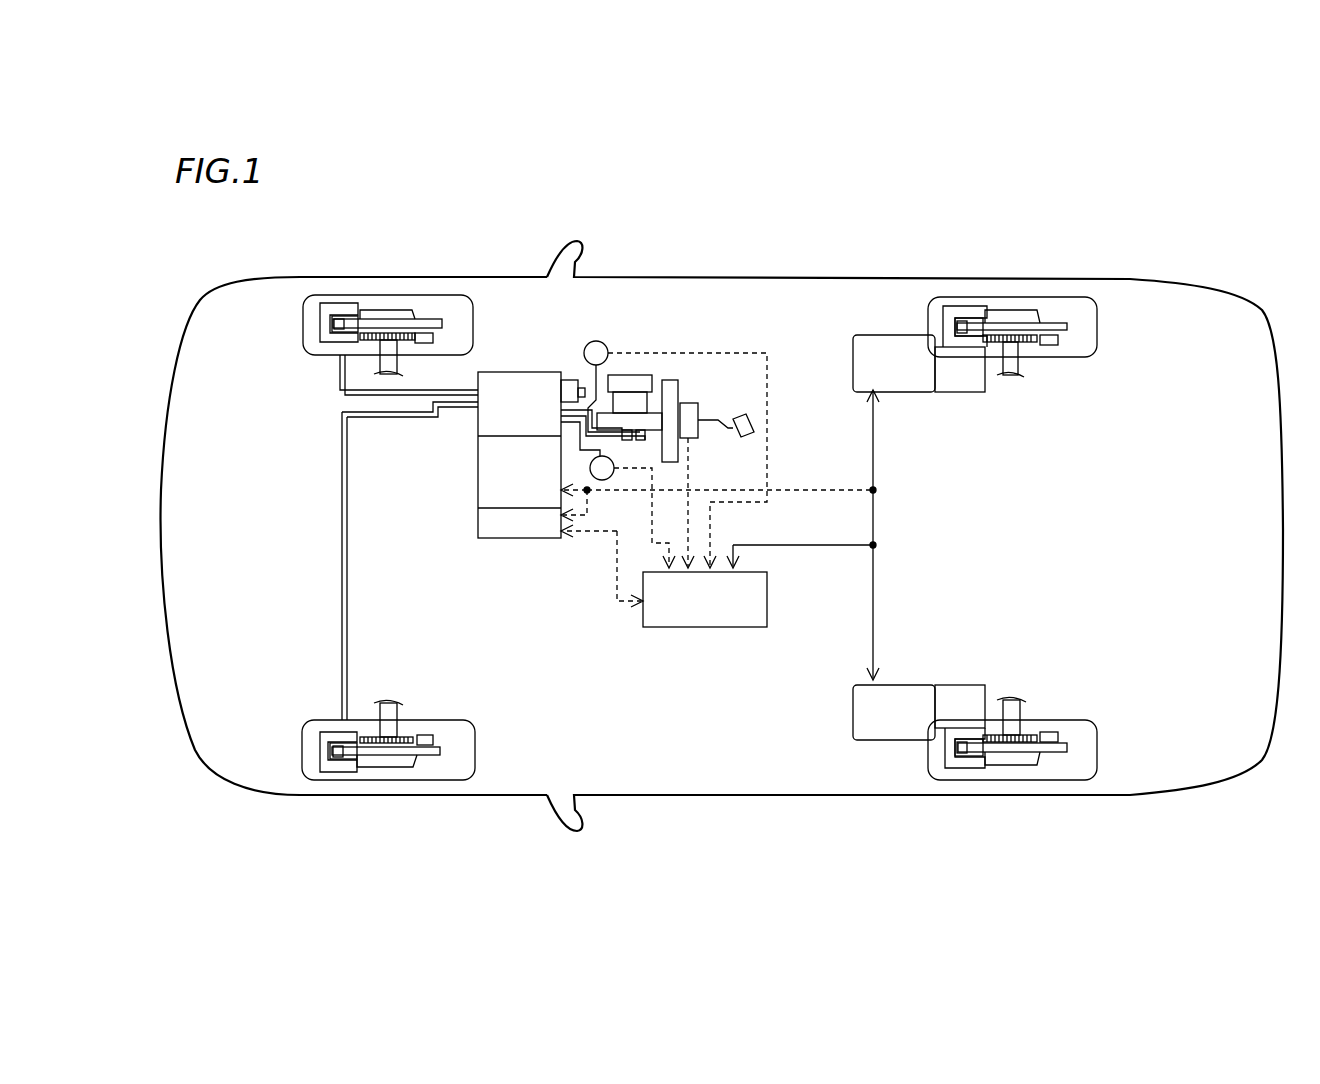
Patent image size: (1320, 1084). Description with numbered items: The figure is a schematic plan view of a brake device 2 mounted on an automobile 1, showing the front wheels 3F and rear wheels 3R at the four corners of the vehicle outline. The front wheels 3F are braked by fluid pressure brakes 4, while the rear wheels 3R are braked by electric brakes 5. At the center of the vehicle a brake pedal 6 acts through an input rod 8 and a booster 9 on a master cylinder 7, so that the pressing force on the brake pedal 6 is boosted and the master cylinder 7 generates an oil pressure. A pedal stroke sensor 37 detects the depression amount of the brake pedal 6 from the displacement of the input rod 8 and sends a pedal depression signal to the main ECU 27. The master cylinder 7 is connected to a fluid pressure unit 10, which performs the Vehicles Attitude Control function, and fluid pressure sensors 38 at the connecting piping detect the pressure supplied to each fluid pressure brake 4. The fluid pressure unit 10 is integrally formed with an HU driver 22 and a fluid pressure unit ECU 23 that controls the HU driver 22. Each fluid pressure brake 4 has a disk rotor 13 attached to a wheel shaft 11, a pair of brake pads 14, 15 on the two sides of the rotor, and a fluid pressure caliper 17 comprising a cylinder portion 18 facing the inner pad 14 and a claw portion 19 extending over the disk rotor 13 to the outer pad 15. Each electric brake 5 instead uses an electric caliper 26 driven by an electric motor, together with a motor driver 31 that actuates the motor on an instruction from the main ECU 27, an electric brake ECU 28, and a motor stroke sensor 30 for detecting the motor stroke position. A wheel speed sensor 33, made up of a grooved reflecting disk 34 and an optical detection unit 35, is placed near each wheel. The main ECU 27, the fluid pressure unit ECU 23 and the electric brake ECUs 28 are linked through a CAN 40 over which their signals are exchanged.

The automobile 1 is at (1155, 285).
The brake device 2 is at (820, 297).
The front wheel 3F is at (318, 296).
The rear wheel 3R is at (1085, 297).
The fluid pressure brake 4 is at (290, 361).
The electric brake 5 is at (1103, 314).
The brake pedal 6 is at (755, 430).
The master cylinder 7 is at (628, 376).
The input rod 8 is at (742, 414).
The booster 9 is at (669, 380).
The fluid pressure unit 10 is at (513, 372).
The wheel shaft 11 is at (378, 368).
The disk rotor 13 is at (402, 322).
The brake pad 14 is at (340, 331).
The brake pad 15 is at (333, 318).
The fluid pressure caliper 17 is at (320, 303).
The cylinder portion 18 is at (328, 344).
The claw portion 19 is at (352, 307).
The HU driver 22 is at (478, 455).
The fluid pressure unit ECU 23 is at (522, 540).
The electric caliper 26 is at (950, 307).
The main ECU 27 is at (653, 628).
The electric brake ECU 28 is at (883, 340).
The motor stroke sensor 30 is at (978, 380).
The motor driver 31 is at (955, 393).
The wheel speed sensor 33 is at (425, 512).
The reflecting disk 34 is at (395, 343).
The detection unit 35 is at (424, 344).
The pedal stroke sensor 37 is at (702, 403).
The fluid pressure sensor 38 is at (596, 341).
The CAN 40 is at (873, 510).